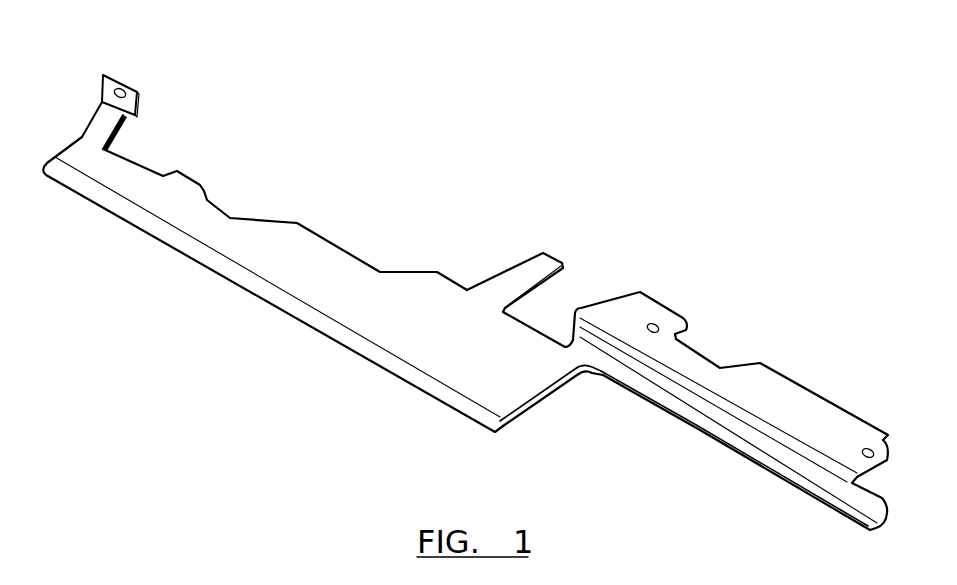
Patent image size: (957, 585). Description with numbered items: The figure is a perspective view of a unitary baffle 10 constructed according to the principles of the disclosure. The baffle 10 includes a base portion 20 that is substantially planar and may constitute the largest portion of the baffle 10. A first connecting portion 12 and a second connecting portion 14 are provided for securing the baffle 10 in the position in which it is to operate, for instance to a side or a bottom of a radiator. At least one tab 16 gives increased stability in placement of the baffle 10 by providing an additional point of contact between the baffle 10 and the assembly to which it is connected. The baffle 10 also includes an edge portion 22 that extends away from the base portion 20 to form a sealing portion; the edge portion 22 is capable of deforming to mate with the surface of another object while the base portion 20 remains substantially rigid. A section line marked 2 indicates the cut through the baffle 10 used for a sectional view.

The baffle 10 is at (428, 178).
The first connecting portion 12 is at (120, 73).
The second connecting portion 14 is at (787, 400).
The tab 16 is at (552, 253).
The base portion 20 is at (506, 390).
The edge portion 22 is at (477, 410).
The section line for FIG. 2 is at (392, 415).